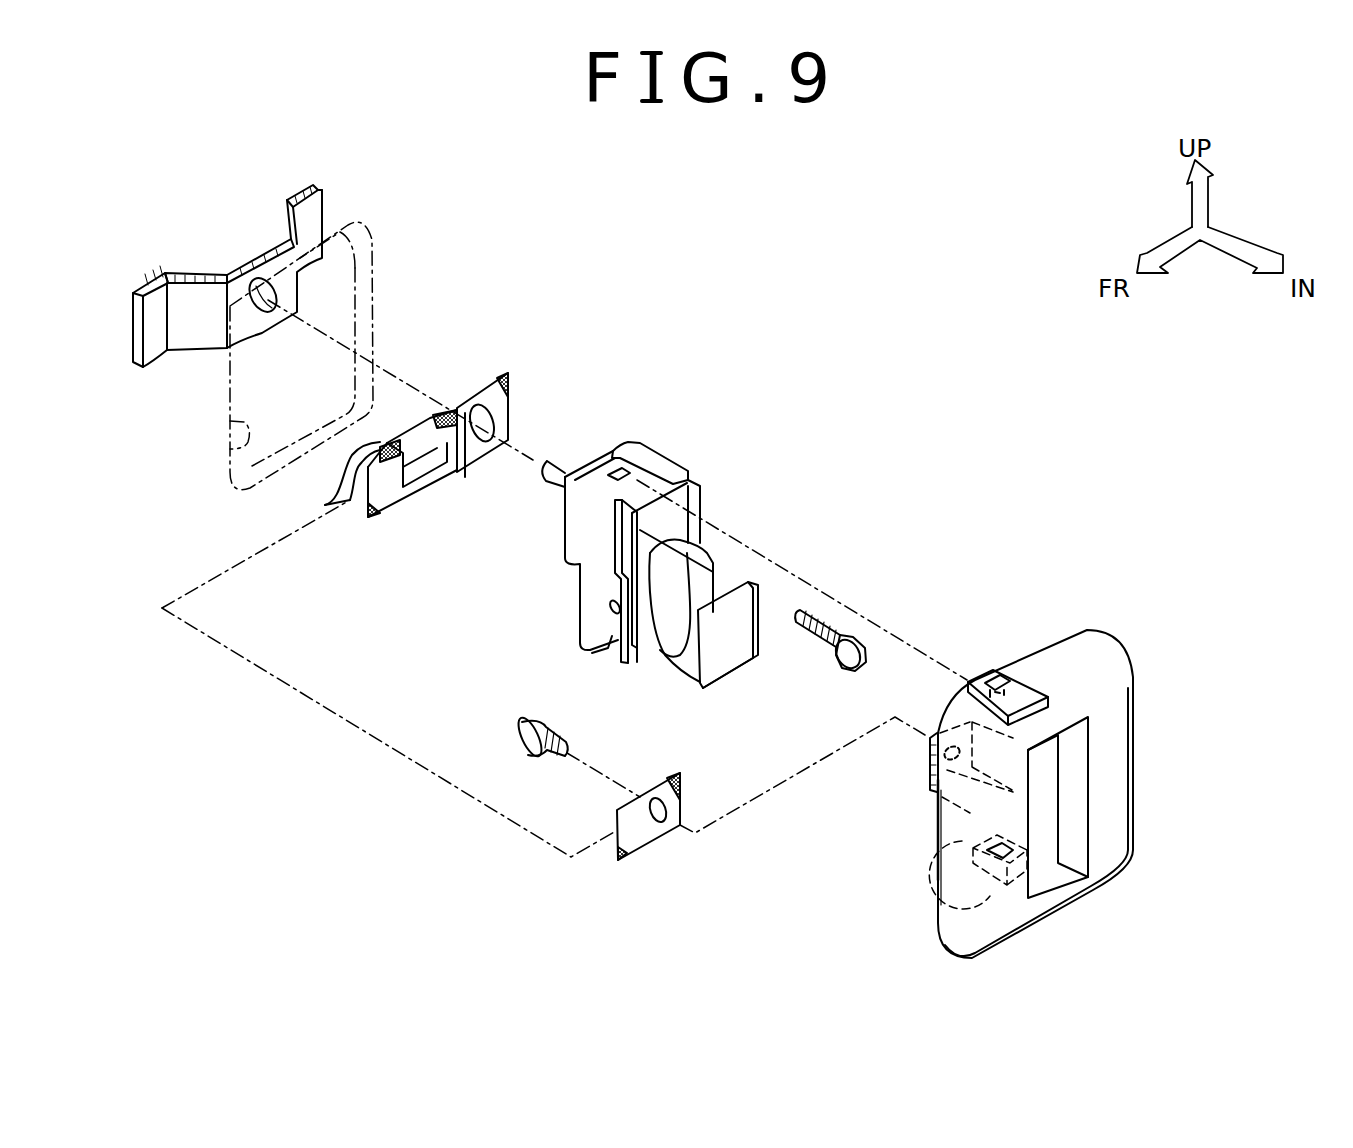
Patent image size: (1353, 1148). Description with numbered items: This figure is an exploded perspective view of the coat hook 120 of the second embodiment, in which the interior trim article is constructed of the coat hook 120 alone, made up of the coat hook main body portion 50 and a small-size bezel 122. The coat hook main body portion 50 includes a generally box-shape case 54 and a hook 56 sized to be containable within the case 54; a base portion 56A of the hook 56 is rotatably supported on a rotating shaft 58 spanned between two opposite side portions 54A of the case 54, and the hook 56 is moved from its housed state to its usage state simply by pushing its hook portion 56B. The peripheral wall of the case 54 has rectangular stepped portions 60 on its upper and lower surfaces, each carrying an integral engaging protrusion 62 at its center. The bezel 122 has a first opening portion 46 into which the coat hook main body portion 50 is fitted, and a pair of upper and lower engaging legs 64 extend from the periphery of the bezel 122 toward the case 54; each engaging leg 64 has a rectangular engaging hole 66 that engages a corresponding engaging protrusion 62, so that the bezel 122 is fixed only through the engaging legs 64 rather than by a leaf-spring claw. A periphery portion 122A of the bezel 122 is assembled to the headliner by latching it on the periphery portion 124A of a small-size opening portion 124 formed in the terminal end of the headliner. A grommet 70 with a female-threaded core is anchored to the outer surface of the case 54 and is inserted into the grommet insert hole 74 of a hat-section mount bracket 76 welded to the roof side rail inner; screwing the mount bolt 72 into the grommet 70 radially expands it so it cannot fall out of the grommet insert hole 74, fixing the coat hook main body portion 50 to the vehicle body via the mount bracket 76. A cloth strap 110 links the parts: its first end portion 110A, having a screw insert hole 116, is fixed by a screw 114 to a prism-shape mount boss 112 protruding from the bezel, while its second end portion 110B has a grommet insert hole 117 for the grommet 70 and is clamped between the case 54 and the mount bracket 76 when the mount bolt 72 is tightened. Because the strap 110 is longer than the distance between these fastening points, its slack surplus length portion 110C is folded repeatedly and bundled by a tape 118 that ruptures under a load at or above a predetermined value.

The first opening portion 46 is at (1077, 870).
The coat hook main body portion 50 is at (634, 576).
The case 54 is at (634, 536).
The side portions 54A is at (583, 585).
The hook 56 is at (720, 629).
The base portion 56A is at (690, 560).
The hook portion 56B is at (678, 682).
The rotating shaft 58 is at (607, 640).
The stepped portions 60 is at (649, 435).
The engaging protrusion 62 is at (616, 468).
The engaging leg 64 is at (977, 680).
The engaging hole 66 is at (992, 686).
The grommet 70 is at (552, 480).
The mount bolt 72 is at (868, 658).
The grommet insert hole 74 is at (203, 292).
The mount bracket 76 is at (130, 330).
The strap 110 is at (400, 445).
The first end portion 110A is at (669, 801).
The second end portion 110B is at (483, 423).
The surplus length portion 110C is at (325, 505).
The mount boss 112 is at (930, 767).
The screw 114 is at (525, 722).
The screw insert hole 116 is at (658, 800).
The grommet insert hole 117 is at (484, 440).
The tape 118 is at (422, 485).
The coat hook 120 is at (897, 482).
The bezel 122 is at (1035, 768).
The periphery portion 122A is at (937, 838).
The opening portion 124 is at (230, 446).
The periphery portion 124A is at (277, 304).